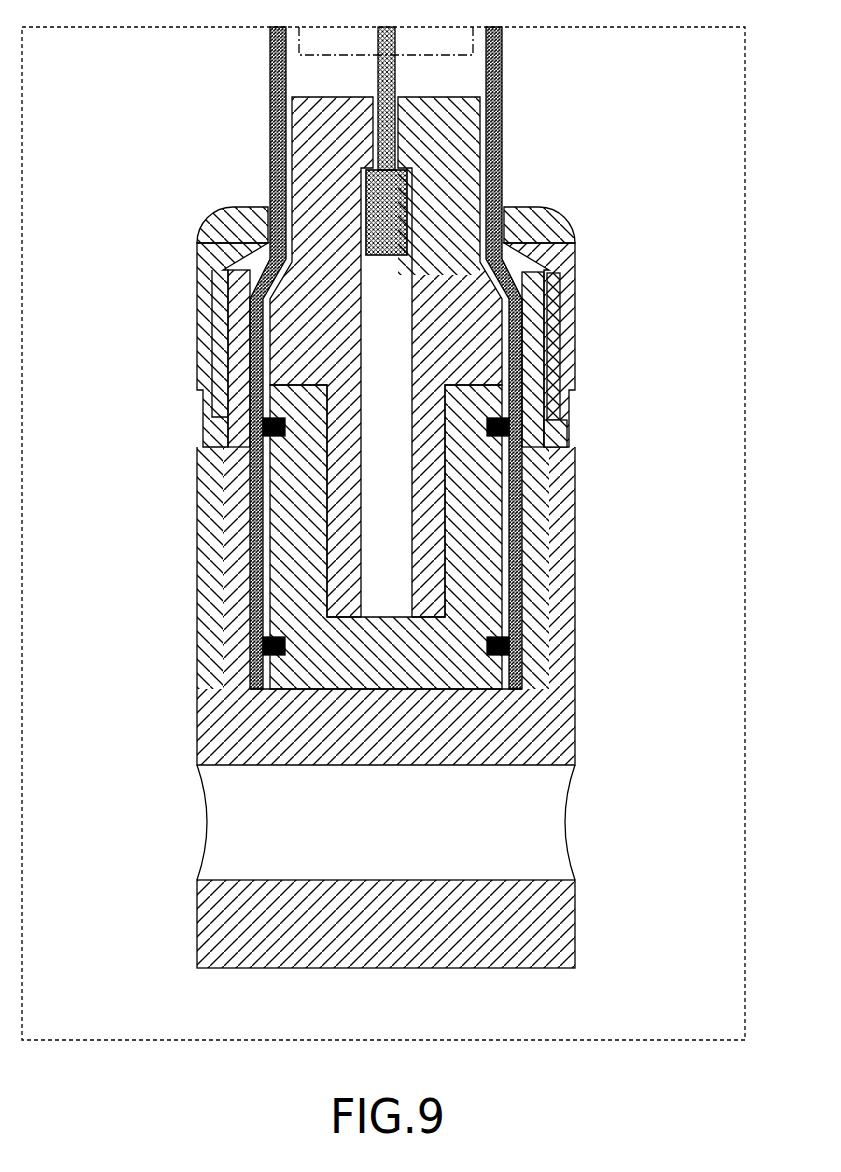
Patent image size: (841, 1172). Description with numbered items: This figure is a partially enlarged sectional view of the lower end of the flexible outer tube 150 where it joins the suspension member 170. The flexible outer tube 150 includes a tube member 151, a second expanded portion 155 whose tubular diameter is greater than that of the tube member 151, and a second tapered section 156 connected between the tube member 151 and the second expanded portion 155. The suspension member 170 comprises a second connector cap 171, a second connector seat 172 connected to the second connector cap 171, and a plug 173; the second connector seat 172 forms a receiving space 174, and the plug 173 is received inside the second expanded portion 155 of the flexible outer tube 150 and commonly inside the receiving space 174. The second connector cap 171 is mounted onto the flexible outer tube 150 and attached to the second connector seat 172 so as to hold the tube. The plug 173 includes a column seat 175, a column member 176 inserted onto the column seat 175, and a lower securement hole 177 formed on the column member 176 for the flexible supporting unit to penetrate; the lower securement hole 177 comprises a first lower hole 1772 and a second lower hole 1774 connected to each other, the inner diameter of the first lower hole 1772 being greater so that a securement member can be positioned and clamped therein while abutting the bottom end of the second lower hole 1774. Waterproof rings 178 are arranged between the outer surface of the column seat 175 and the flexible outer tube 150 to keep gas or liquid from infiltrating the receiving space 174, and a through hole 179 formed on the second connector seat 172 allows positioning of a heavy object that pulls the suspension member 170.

The flexible outer tube 150 is at (458, 358).
The tube member 151 is at (502, 167).
The second expanded portion 155 is at (522, 352).
The second tapered section 156 is at (521, 271).
The suspension member 170 is at (458, 605).
The second connector cap 171 is at (571, 368).
The second connector seat 172 is at (572, 510).
The plug 173 is at (286, 393).
The receiving space 174 is at (528, 557).
The column seat 175 is at (288, 485).
The column member 176 is at (293, 352).
The lower securement hole 177 is at (276, 141).
The first lower hole 1772 is at (363, 215).
The second lower hole 1774 is at (375, 135).
The waterproof ring 178 is at (500, 645).
The through hole 179 is at (534, 827).